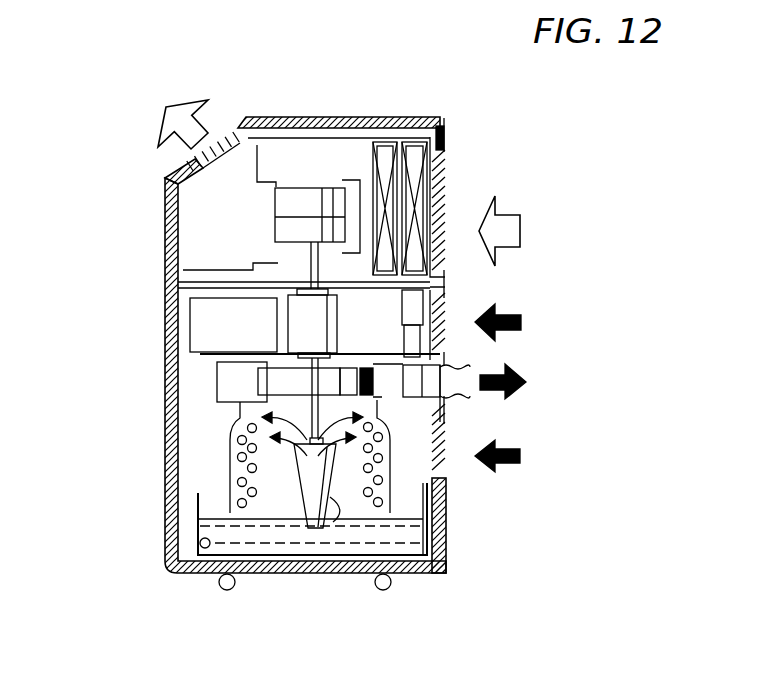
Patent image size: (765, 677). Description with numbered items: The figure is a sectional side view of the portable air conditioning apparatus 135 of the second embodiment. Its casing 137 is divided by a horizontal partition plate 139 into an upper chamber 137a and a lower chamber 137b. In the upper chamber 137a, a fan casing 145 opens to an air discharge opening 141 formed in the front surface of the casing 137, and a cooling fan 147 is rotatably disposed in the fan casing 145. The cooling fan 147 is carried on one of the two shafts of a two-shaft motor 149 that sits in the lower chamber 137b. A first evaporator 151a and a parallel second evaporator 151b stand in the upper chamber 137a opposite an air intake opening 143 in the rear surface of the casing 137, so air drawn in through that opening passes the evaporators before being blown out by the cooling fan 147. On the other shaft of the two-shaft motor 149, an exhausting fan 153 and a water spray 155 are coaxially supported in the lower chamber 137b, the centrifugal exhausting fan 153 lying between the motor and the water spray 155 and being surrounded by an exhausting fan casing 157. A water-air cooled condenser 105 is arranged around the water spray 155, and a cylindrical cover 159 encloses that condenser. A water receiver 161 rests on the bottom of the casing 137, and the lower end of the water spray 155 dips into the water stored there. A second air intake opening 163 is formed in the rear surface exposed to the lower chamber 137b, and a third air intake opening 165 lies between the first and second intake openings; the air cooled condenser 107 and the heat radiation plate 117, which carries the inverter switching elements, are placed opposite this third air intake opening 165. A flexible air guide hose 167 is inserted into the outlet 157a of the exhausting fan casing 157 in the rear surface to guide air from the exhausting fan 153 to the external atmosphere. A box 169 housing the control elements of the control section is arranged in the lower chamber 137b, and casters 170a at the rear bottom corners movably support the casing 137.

The water-air cooled condenser 105 is at (232, 470).
The air cooled condenser 107 is at (418, 308).
The heat radiation plate 117 is at (403, 336).
The portable air conditioning apparatus 135 is at (378, 118).
The casing 137 is at (165, 252).
The upper chamber 137a is at (272, 250).
The lower chamber 137b is at (410, 502).
The horizontal partition plate 139 is at (187, 297).
The air discharge opening 141 is at (222, 137).
The air intake opening 143 is at (443, 192).
The fan casing 145 is at (257, 157).
The cooling fan 147 is at (322, 188).
The two-shaft motor 149 is at (338, 314).
The first evaporator 151a is at (387, 150).
The second evaporator 151b is at (418, 147).
The exhausting fan 153 is at (272, 385).
The water spray 155 is at (343, 520).
The exhausting fan casing 157 is at (217, 370).
The outlet 157a is at (448, 398).
The cylindrical cover 159 is at (242, 460).
The water receiver 161 is at (195, 508).
The second air intake opening 163 is at (443, 467).
The third air intake opening 165 is at (452, 338).
The flexible air guide hose 167 is at (468, 388).
The box 169 is at (200, 328).
The caster 170a is at (235, 590).